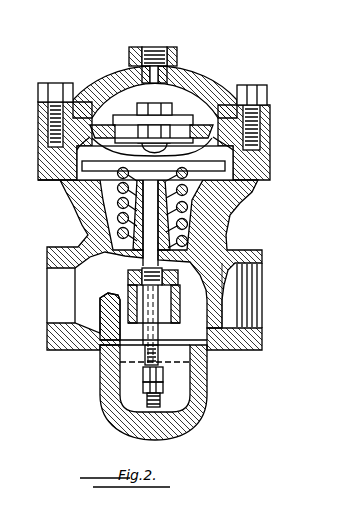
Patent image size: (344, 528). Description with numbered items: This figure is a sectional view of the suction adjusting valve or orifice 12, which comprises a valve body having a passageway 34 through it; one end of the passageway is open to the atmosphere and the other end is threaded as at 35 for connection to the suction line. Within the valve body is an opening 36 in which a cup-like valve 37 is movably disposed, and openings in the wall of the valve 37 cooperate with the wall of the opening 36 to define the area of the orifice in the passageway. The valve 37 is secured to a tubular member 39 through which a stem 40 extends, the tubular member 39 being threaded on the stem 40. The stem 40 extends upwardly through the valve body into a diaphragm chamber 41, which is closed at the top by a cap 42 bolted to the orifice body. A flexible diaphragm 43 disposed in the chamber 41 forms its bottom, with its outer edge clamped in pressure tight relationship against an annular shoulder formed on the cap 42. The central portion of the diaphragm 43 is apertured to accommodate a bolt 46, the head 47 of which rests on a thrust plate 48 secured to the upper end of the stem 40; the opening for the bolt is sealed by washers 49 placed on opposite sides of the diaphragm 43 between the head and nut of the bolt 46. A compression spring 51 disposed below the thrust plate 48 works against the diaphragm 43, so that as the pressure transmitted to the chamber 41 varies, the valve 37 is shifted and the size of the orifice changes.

The orifice 12 is at (274, 209).
The passageway 34 is at (97, 304).
The threaded end 35 is at (258, 300).
The opening 36 is at (185, 314).
The valve 37 is at (128, 276).
The tubular member 39 is at (143, 329).
The stem 40 is at (158, 256).
The diaphragm chamber 41 is at (190, 108).
The cap 42 is at (196, 80).
The flexible diaphragm 43 is at (221, 108).
The bolt 46 is at (135, 113).
The head 47 is at (232, 157).
The thrust plate 48 is at (225, 167).
The washers 49 is at (62, 148).
The compression spring 51 is at (188, 224).